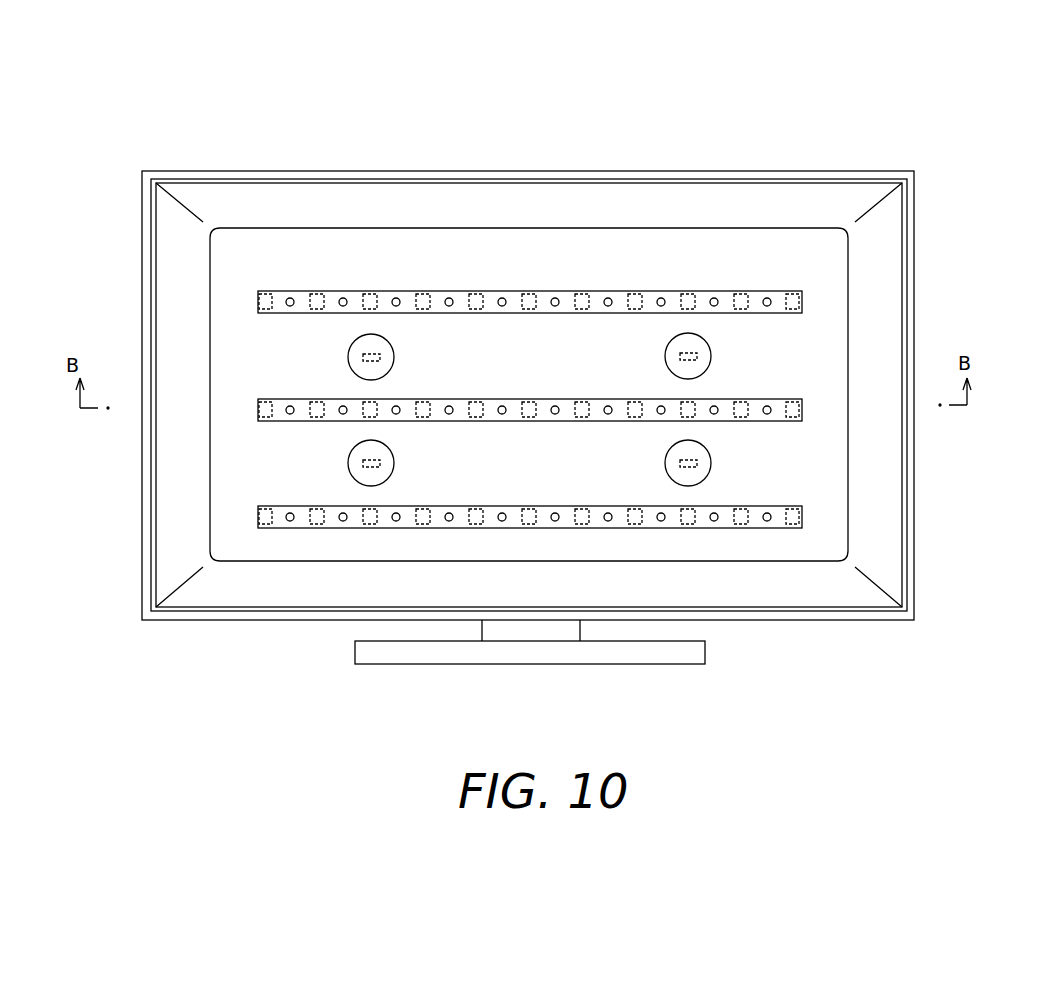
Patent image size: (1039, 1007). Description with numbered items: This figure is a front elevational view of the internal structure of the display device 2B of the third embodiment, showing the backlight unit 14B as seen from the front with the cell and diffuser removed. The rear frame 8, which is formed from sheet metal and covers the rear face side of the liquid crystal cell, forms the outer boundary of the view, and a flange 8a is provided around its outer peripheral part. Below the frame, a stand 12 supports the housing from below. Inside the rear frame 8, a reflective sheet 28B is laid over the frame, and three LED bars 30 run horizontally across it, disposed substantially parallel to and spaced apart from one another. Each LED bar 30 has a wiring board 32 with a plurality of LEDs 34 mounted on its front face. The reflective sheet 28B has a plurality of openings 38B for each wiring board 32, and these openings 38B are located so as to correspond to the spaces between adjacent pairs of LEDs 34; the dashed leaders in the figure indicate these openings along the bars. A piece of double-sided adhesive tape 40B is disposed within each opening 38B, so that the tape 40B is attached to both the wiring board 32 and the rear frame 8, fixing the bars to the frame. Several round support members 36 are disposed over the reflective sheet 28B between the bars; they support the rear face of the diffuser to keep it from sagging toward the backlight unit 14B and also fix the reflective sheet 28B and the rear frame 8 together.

The display device 2B is at (872, 130).
The rear frame 8 is at (912, 200).
The flange 8a is at (908, 226).
The reflective sheet 28B is at (867, 273).
The backlight unit 14B is at (827, 347).
The LED bar 30 is at (600, 240).
The wiring board 32 is at (580, 297).
The LED 34 is at (556, 299).
The support member 36 is at (392, 349).
The opening 38B is at (387, 315).
The double-sided adhesive tape 40B is at (425, 306).
The stand 12 is at (692, 653).